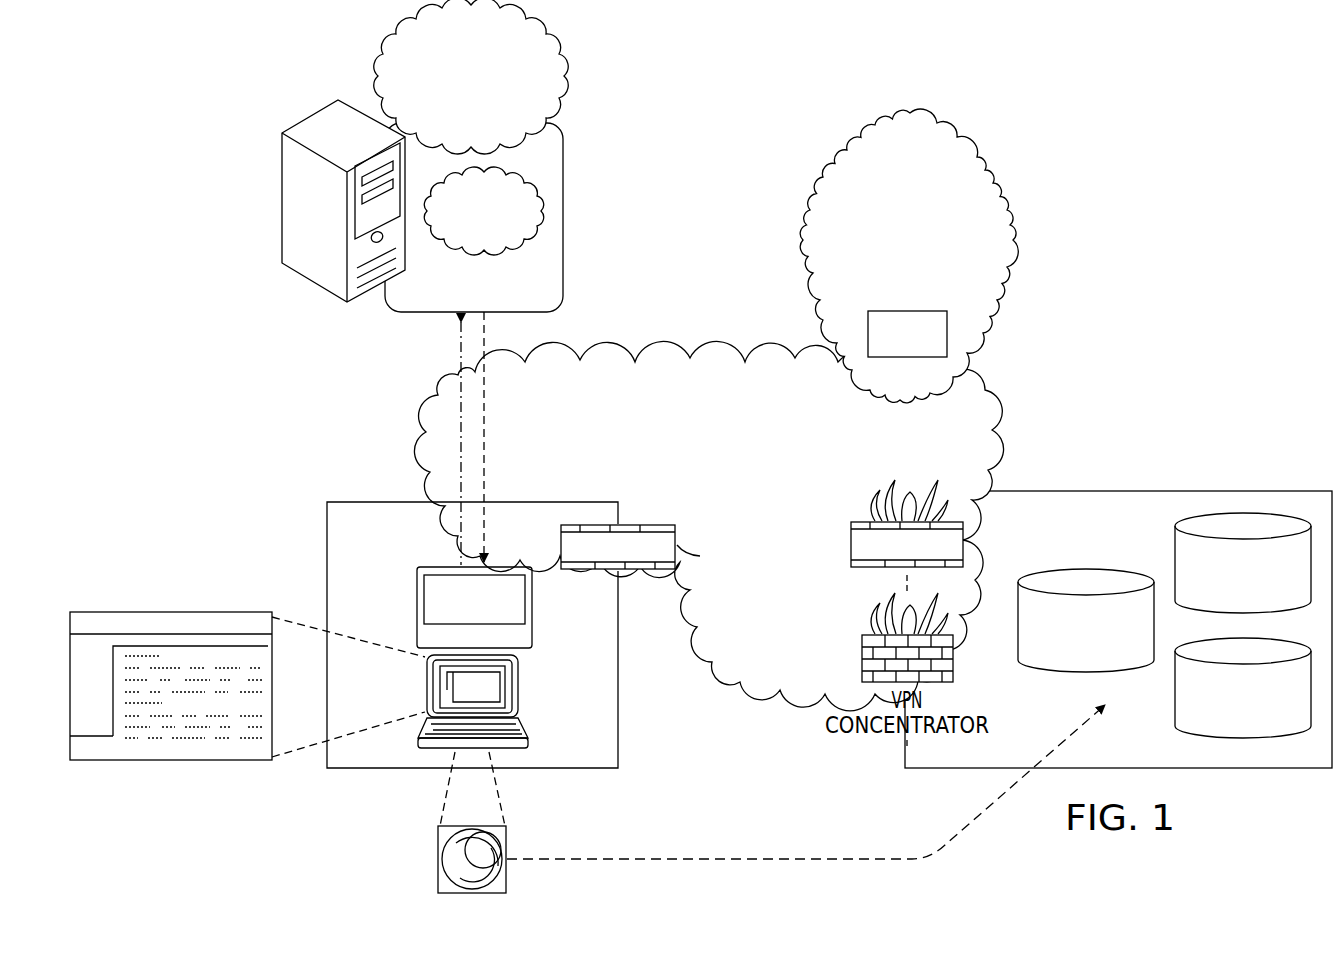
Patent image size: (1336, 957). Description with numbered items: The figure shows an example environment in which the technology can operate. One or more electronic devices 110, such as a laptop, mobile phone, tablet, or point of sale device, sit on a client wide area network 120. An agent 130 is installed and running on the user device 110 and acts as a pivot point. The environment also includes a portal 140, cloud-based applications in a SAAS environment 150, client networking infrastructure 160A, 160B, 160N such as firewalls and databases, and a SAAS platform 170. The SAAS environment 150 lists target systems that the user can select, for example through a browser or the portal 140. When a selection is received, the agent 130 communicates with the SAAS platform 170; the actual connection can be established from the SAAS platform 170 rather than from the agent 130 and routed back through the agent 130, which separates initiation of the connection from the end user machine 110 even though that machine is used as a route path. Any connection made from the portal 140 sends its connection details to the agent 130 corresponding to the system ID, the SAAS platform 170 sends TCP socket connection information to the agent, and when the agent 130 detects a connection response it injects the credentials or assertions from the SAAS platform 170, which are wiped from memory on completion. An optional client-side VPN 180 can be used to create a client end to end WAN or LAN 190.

The electronic device 110 is at (519, 690).
The client wide area network 120 is at (674, 468).
The agent 130 is at (416, 602).
The portal 140 is at (172, 761).
The SAAS environment 150 is at (1016, 245).
The client networking infrastructure 160A is at (582, 570).
The client networking infrastructure 160B is at (851, 545).
The client networking infrastructure 160N is at (1133, 488).
The SAAS platform 170 is at (384, 78).
The client-side VPN 180 is at (437, 864).
The client end to end WAN or LAN 190 is at (668, 868).